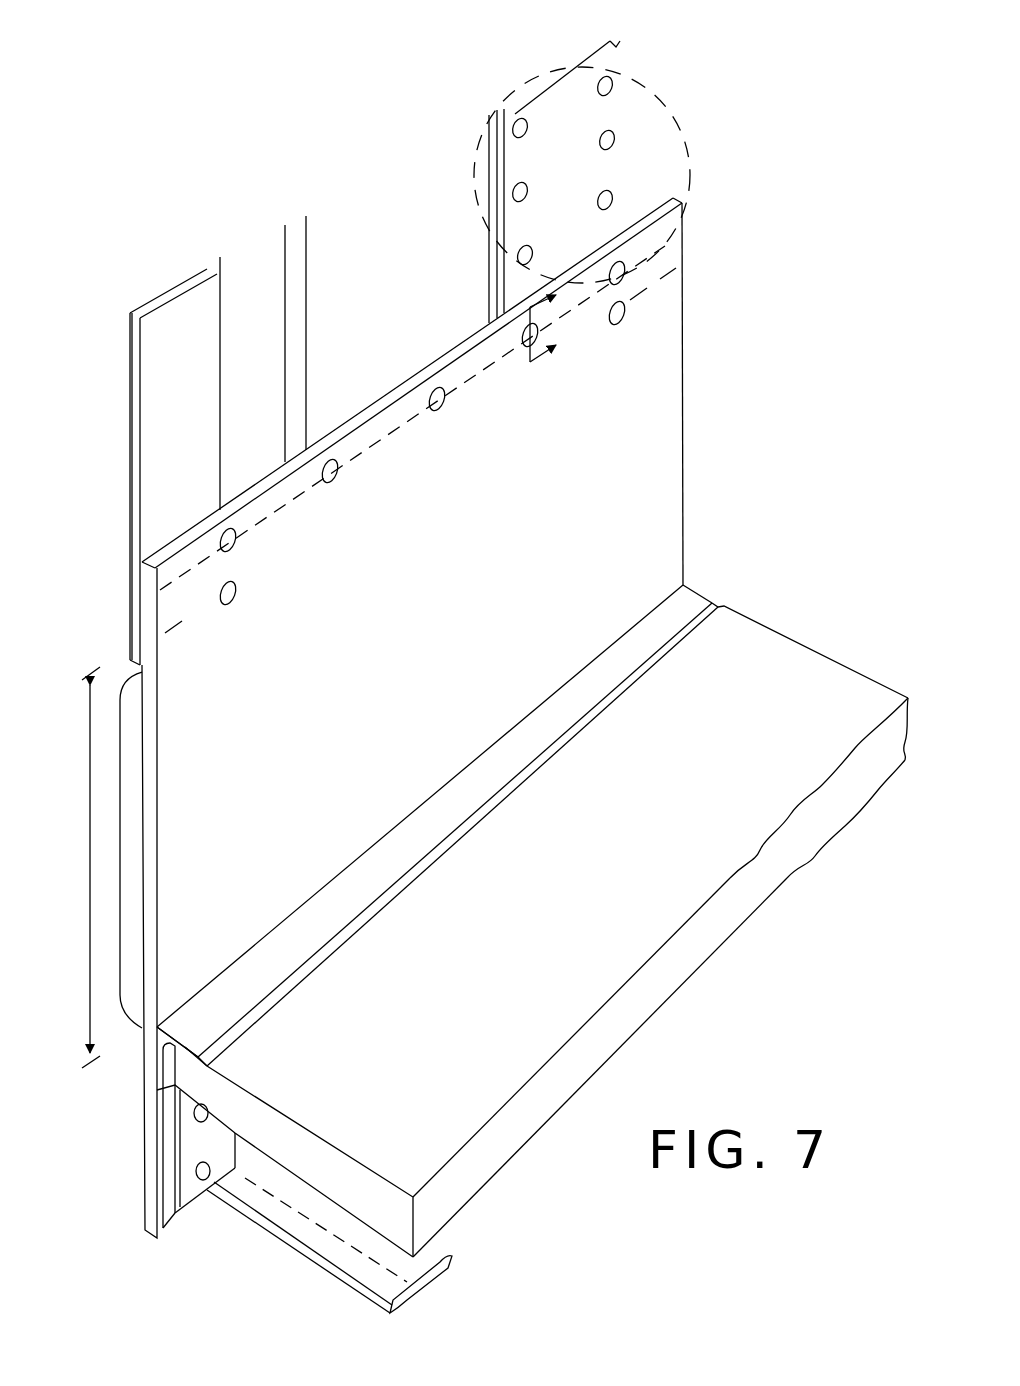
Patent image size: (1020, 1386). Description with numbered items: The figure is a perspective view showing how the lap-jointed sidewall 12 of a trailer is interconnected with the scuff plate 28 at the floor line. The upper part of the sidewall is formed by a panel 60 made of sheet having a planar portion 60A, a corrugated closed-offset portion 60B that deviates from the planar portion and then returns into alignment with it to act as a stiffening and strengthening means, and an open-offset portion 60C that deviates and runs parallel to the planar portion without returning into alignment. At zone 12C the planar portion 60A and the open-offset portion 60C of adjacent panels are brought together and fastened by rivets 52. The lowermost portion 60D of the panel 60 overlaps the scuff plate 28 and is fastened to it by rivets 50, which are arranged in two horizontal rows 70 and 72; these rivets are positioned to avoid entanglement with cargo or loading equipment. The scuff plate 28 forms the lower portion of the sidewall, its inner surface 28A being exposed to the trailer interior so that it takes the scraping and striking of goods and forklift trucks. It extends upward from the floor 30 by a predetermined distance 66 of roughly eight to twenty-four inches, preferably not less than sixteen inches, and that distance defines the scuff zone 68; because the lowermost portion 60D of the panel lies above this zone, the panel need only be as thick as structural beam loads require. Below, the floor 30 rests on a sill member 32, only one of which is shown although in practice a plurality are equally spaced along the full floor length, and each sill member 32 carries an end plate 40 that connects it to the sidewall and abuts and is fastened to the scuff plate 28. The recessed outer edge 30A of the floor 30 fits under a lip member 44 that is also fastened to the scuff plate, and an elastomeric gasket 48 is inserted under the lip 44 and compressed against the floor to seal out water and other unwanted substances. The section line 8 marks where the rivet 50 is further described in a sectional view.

The section line 8- 8 is at (553, 341).
The sidewall 12 is at (103, 327).
The zone 12C is at (712, 100).
The scuff plate 28 is at (688, 362).
The inner surface 28A is at (655, 532).
The floor 30 is at (810, 650).
The outer edge 30A is at (312, 962).
The sill member 32 is at (327, 1247).
The end plate 40 is at (176, 1170).
The lip member 44 is at (180, 1010).
The elastomeric gasket 48 is at (193, 1045).
The rivets 50 is at (235, 545).
The rivets 52 is at (598, 94).
The panel 60 is at (317, 160).
The planar portion 60A is at (500, 228).
The closed-offset portion 60B is at (270, 312).
The open-offset portion 60C is at (460, 216).
The lowermost portion 60D is at (129, 585).
The predetermined distance 66 is at (83, 867).
The scuff zone 68 is at (112, 798).
The horizontal row of rivets 70 is at (208, 562).
The horizontal row of rivets 72 is at (191, 608).